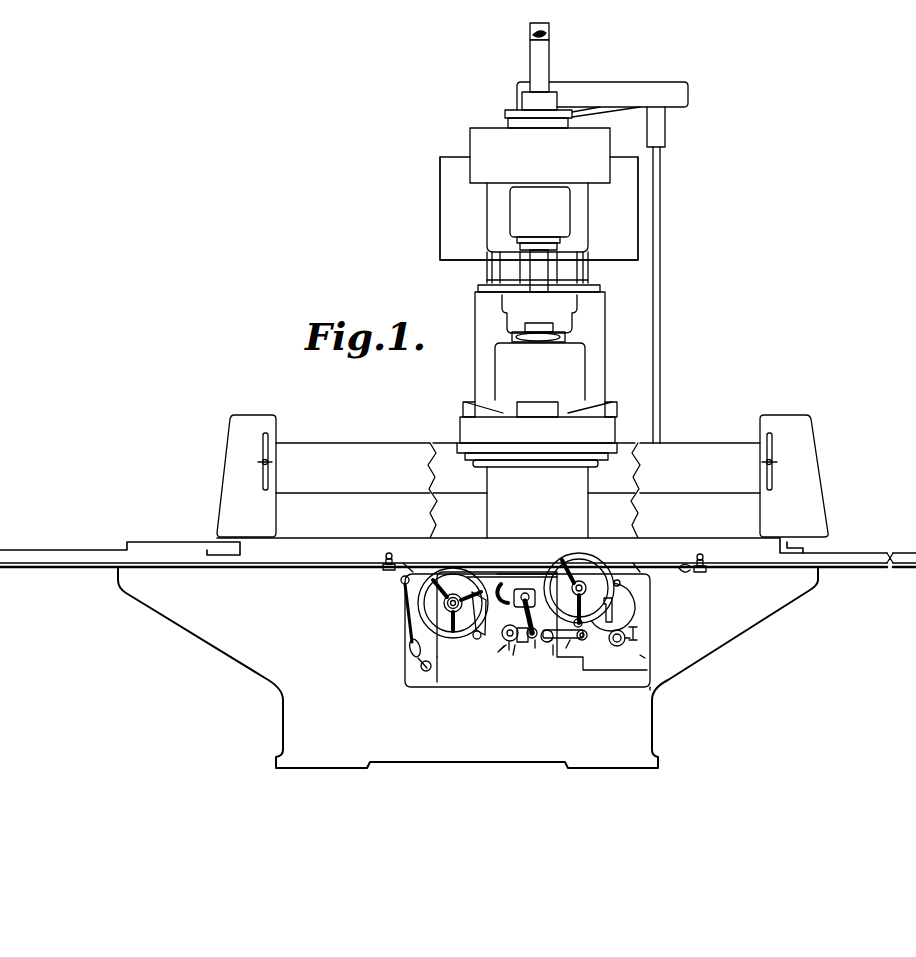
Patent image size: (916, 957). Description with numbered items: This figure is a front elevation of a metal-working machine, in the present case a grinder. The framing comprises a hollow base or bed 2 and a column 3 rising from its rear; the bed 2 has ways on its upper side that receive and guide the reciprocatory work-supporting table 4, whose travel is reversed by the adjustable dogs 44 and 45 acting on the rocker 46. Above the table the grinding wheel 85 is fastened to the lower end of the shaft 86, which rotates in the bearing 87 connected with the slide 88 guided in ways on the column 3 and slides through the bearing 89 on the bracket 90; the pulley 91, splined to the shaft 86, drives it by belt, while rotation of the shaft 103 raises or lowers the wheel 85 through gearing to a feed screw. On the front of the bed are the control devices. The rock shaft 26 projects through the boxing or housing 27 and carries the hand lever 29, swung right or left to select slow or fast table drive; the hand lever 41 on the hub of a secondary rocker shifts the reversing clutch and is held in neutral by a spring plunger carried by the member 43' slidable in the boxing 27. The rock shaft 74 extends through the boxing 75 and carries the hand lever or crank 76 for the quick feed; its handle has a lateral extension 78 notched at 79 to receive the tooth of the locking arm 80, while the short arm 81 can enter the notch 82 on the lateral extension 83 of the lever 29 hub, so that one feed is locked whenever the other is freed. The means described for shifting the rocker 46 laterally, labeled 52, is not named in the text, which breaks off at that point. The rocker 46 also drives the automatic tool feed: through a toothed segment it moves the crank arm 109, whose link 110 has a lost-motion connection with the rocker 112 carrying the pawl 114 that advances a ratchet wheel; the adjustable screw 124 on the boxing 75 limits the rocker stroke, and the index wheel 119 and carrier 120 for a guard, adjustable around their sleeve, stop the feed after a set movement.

The hollow base or bed 2 is at (468, 667).
The column 3 is at (440, 270).
The reciprocatory work-supporting table 4 is at (452, 547).
The rock shaft 26 is at (535, 645).
The boxing or housing 27 is at (440, 662).
The hand lever 29 is at (506, 642).
The hand lever 41 is at (440, 612).
The member 43' is at (523, 539).
The adjustable dog 44 is at (703, 573).
The adjustable dog 45 is at (402, 570).
The rocker 46 is at (508, 578).
The rod 52 is at (500, 652).
The rock shaft 74 is at (585, 642).
The boxing 75 is at (642, 655).
The hand lever or crank 76 is at (548, 642).
The lateral extension 78 is at (553, 645).
The notch 79 is at (566, 648).
The locking arm 80 is at (509, 645).
The short arm 81 is at (503, 650).
The notch 82 is at (513, 655).
The lateral extension 83 is at (577, 573).
The grinding wheel 85 is at (510, 462).
The shaft 86 is at (547, 60).
The bearing 87 is at (540, 371).
The slide 88 is at (592, 363).
The bearing 89 is at (540, 239).
The bracket 90 is at (580, 218).
The pulley 91 is at (540, 150).
The shaft 103 is at (660, 283).
The crank arm 109 is at (506, 584).
The link 110 is at (652, 688).
The rocker 112 is at (637, 606).
The pawl 114 is at (633, 563).
The index wheel 119 is at (650, 625).
The carrier 120 is at (620, 583).
The screw 124 is at (635, 635).